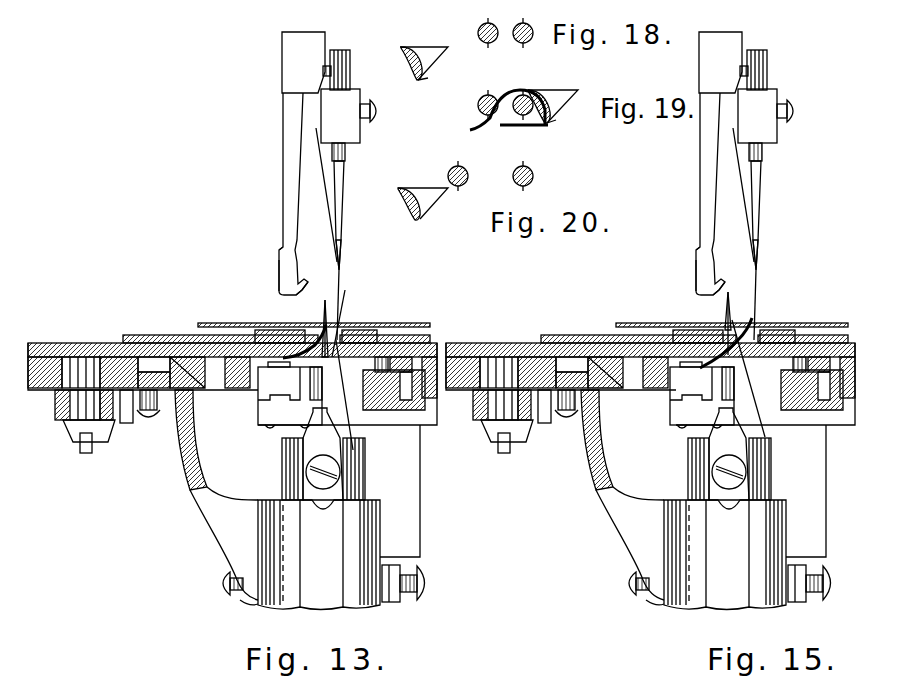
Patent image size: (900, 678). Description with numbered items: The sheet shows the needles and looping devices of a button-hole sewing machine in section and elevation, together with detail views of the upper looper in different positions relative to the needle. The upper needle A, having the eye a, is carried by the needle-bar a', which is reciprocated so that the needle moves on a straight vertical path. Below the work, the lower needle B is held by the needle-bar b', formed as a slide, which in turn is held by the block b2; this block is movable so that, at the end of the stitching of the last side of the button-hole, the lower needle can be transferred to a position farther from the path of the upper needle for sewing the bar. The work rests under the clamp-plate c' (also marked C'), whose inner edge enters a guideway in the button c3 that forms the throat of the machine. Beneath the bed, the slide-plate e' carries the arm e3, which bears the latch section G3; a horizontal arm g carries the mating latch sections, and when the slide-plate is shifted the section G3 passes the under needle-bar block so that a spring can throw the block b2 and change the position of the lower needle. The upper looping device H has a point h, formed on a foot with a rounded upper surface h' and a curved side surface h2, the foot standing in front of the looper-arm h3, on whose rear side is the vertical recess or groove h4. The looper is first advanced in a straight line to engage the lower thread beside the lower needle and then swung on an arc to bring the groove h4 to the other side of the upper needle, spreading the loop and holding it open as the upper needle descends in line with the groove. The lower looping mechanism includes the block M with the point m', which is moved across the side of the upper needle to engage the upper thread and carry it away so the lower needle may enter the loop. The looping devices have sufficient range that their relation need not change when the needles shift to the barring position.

In FIG. 13, the upper needle A is at (347, 193).
In FIG. 15, the upper needle A is at (764, 193).
In FIG. 18, the upper needle A is at (528, 25).
In FIG. 19, the upper needle A is at (533, 96).
In FIG. 20, the upper needle A is at (535, 176).
In FIG. 13, the eye a is at (351, 255).
In FIG. 15, the eye a is at (768, 255).
In FIG. 13, the needle-bar a' is at (328, 62).
In FIG. 15, the needle-bar a' is at (745, 62).
In FIG. 13, the lower needle B is at (329, 313).
In FIG. 15, the lower needle B is at (733, 312).
In FIG. 18, the lower needle B is at (492, 25).
In FIG. 19, the lower needle B is at (481, 114).
In FIG. 20, the lower needle B is at (465, 172).
In FIG. 13, the clamp-plate C' is at (276, 323).
In FIG. 15, the clamp-plate C' is at (694, 323).
In FIG. 13, the clamp-plate c' is at (232, 330).
In FIG. 15, the clamp-plate c' is at (650, 330).
In FIG. 13, the button forming the throat c3 is at (290, 323).
In FIG. 13, the slide-plate e' is at (91, 353).
In FIG. 15, the slide-plate e' is at (509, 353).
In FIG. 13, the arm e3 is at (60, 422).
In FIG. 15, the arm e3 is at (478, 422).
In FIG. 13, the latch section G3 is at (126, 423).
In FIG. 15, the latch section G3 is at (544, 423).
In FIG. 13, the arm g is at (200, 438).
In FIG. 15, the arm g is at (606, 438).
In FIG. 13, the upper looping device H is at (283, 198).
In FIG. 15, the upper looping device H is at (700, 198).
In FIG. 18, the upper looping device H is at (420, 81).
In FIG. 19, the upper looping device H is at (553, 118).
In FIG. 13, the point h is at (314, 279).
In FIG. 15, the point h is at (731, 279).
In FIG. 18, the point h is at (426, 54).
In FIG. 19, the point h is at (556, 97).
In FIG. 20, the point h is at (423, 194).
In FIG. 13, the rounded upper surface h' is at (302, 301).
In FIG. 15, the rounded upper surface h' is at (719, 301).
In FIG. 13, the curved side surface h2 is at (280, 285).
In FIG. 15, the curved side surface h2 is at (697, 285).
In FIG. 13, the looper-arm h3 is at (283, 249).
In FIG. 15, the looper-arm h3 is at (700, 249).
In FIG. 18, the vertical recess or groove h4 is at (405, 50).
In FIG. 20, the vertical recess or groove h4 is at (404, 204).
In FIG. 13, the block M is at (262, 378).
In FIG. 15, the block M is at (674, 378).
In FIG. 13, the point m' is at (279, 383).
In FIG. 15, the point m' is at (691, 383).
In FIG. 13, the needle-bar b' is at (323, 458).
In FIG. 15, the needle-bar b' is at (729, 458).
In FIG. 13, the block b2 is at (382, 508).
In FIG. 15, the block b2 is at (788, 508).